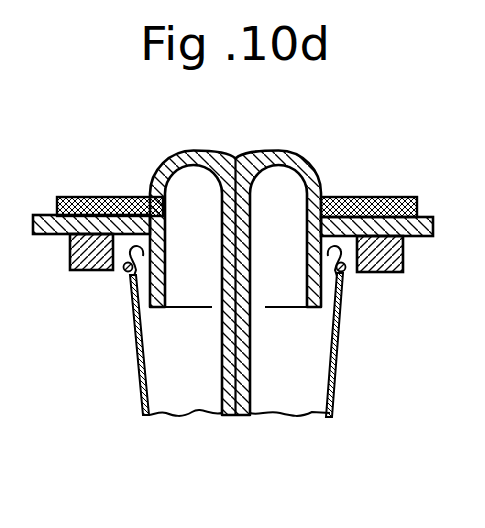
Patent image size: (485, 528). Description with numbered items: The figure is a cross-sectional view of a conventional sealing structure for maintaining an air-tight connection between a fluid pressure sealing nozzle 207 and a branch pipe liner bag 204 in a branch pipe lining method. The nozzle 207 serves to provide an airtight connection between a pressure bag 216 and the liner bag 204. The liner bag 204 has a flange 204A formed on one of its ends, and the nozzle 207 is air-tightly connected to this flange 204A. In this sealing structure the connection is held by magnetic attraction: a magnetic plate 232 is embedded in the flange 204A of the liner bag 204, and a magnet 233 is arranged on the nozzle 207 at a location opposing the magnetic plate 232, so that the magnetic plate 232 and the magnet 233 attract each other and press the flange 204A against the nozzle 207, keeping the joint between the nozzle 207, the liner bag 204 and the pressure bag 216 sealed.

The branch pipe liner bag 204 is at (250, 405).
The flange 204A is at (102, 197).
The fluid pressure sealing nozzle 207 is at (47, 248).
The pressure bag 216 is at (334, 376).
The magnetic plate 232 is at (370, 198).
The magnet 233 is at (372, 273).